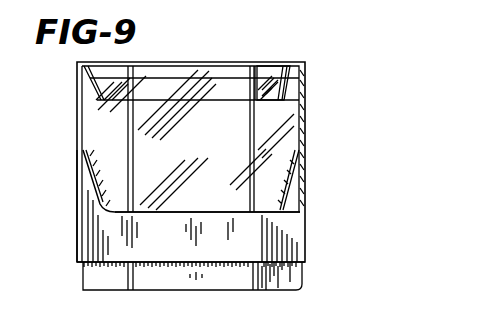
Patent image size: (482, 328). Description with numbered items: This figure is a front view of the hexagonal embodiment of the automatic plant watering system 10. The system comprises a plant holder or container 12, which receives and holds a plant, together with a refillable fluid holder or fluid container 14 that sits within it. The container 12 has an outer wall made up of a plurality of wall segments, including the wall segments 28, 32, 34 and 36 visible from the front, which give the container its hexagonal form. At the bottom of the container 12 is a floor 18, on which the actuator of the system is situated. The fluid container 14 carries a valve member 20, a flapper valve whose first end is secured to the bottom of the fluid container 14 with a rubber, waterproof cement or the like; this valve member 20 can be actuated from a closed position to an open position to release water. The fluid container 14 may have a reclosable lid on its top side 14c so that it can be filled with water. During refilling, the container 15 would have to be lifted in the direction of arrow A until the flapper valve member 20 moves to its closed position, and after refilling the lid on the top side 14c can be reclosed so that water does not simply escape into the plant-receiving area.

The automatic plant watering system 10 is at (76, 110).
The container 15 is at (176, 67).
The top side 14c is at (226, 100).
The fluid container 14 is at (82, 154).
The container 12 is at (77, 216).
The wall segment 34 is at (190, 212).
The wall segment 36 is at (282, 240).
The wall segment 32 is at (100, 257).
The floor 18 is at (258, 290).
The valve member 20 is at (270, 323).
The wall segment 28 is at (322, 323).